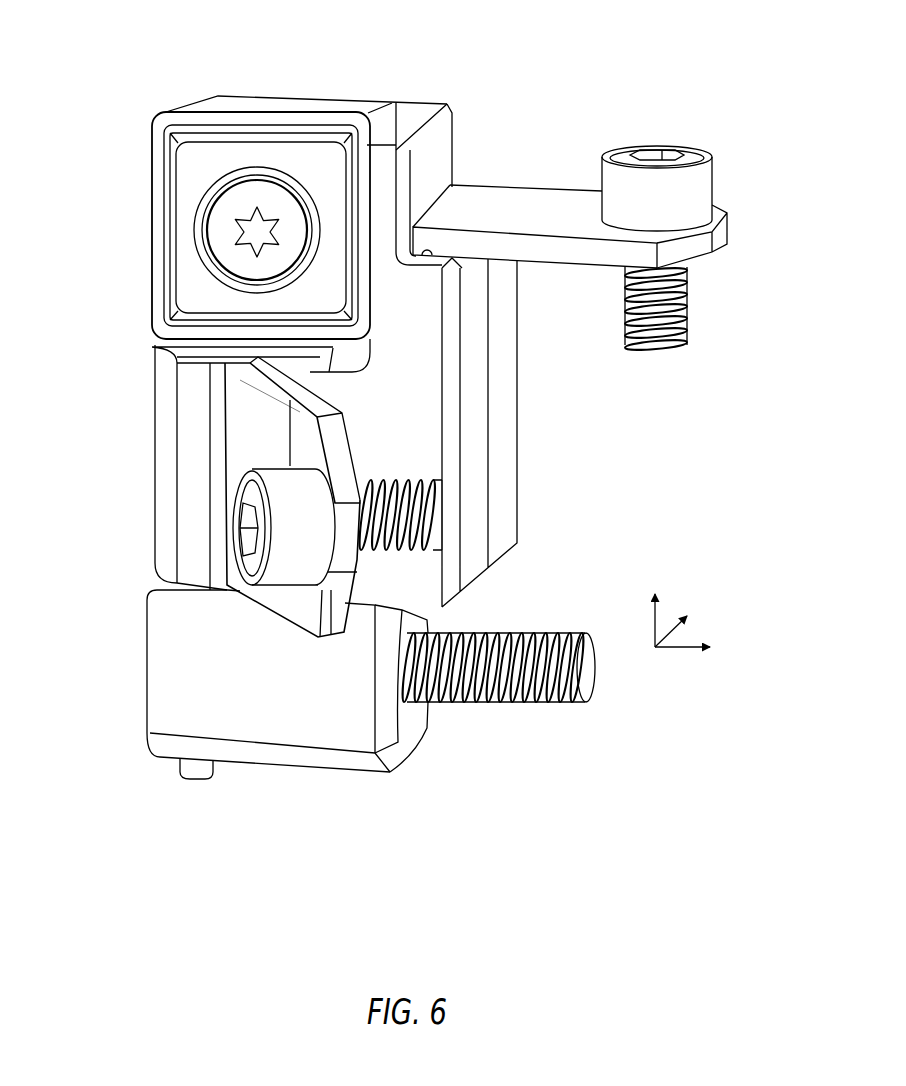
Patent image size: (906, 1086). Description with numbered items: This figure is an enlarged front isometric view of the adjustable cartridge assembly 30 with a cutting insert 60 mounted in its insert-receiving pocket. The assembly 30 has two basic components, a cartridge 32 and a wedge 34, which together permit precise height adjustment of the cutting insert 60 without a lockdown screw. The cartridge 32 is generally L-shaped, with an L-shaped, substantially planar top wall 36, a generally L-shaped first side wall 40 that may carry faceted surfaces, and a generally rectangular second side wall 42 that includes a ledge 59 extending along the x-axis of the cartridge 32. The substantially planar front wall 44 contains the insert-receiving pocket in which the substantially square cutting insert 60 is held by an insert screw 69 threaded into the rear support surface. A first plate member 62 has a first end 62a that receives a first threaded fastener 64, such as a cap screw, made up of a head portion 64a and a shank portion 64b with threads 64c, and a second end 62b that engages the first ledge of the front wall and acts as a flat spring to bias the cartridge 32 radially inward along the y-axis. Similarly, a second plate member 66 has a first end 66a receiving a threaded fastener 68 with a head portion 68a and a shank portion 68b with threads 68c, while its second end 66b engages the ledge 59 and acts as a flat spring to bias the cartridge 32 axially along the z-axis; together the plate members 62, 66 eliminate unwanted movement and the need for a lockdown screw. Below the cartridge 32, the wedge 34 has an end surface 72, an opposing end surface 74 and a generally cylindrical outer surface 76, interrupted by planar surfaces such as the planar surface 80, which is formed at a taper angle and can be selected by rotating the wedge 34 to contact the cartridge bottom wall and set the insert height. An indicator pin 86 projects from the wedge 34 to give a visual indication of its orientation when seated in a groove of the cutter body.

The adjustable cartridge assembly 30 is at (110, 68).
The cartridge 32 is at (565, 456).
The wedge 34 is at (123, 655).
The top wall 36 is at (399, 104).
The first side wall 40 is at (138, 399).
The second side wall 42 is at (520, 368).
The front wall 44 is at (421, 444).
The ledge 59 is at (427, 258).
The cutting insert 60 is at (254, 212).
The first plate member 62 is at (226, 530).
The first end of the first plate member 62a is at (325, 575).
The second end of the first plate member 62b is at (245, 421).
The first threaded fastener 64 is at (317, 575).
The head portion 64a is at (296, 562).
The shank portion 64b is at (398, 553).
The threads 64c is at (425, 545).
The second plate member 66 is at (586, 192).
The first end of the second plate member 66a is at (721, 212).
The second end of the second plate member 66b is at (478, 186).
The threaded fastener 68 is at (687, 218).
The head portion 68a is at (690, 182).
The shank portion 68b is at (698, 280).
The threads 68c is at (665, 302).
The insert screw 69 is at (252, 208).
The end surface 72 is at (232, 718).
The opposing end surface 74 is at (420, 724).
The cylindrical outer surface 76 is at (190, 604).
The planar surface 80 is at (297, 732).
The indicator pin 86 is at (193, 772).